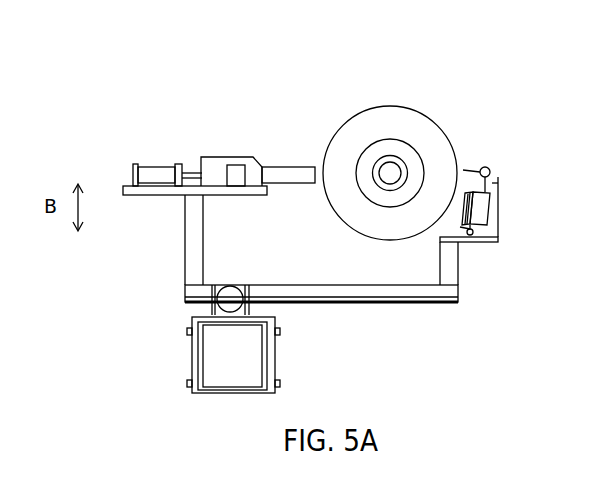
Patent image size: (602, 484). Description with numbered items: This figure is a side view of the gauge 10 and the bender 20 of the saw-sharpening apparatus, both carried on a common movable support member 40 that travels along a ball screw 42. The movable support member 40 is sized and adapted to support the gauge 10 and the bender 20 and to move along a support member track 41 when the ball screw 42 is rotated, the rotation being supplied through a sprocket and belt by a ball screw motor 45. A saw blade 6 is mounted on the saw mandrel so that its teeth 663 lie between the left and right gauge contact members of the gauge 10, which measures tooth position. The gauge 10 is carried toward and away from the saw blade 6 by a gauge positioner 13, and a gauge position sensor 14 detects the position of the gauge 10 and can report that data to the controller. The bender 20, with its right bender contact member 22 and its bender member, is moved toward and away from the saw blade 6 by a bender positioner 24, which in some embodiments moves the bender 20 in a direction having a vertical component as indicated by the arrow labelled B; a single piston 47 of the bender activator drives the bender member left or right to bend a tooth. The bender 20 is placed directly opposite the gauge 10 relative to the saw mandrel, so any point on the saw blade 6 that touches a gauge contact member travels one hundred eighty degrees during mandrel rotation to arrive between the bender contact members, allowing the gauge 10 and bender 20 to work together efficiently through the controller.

The saw blade 6 is at (427, 140).
The teeth 663 is at (417, 110).
The gauge 10 is at (486, 166).
The gauge positioner 13 is at (478, 239).
The gauge position sensor 14 is at (498, 183).
The bender 20 is at (228, 156).
The right bender contact member 22 is at (270, 167).
The bender positioner 24 is at (153, 172).
The movable support member 40 is at (186, 258).
The support member track 41 is at (222, 394).
The ball screw 42 is at (230, 299).
The ball screw motor 45 is at (152, 196).
The piston 47 is at (234, 179).